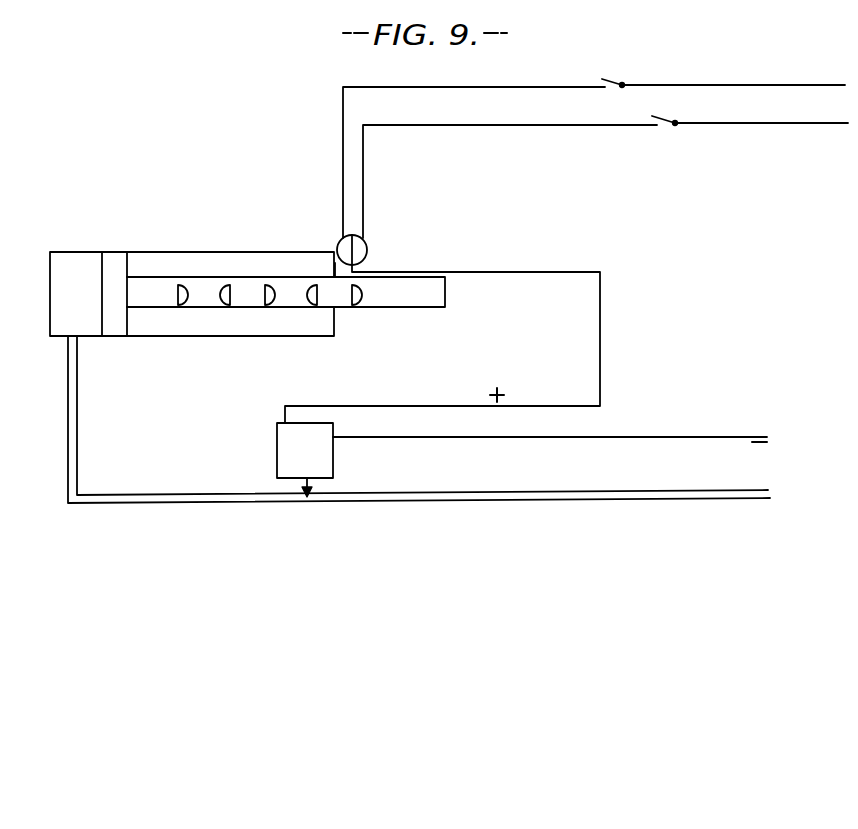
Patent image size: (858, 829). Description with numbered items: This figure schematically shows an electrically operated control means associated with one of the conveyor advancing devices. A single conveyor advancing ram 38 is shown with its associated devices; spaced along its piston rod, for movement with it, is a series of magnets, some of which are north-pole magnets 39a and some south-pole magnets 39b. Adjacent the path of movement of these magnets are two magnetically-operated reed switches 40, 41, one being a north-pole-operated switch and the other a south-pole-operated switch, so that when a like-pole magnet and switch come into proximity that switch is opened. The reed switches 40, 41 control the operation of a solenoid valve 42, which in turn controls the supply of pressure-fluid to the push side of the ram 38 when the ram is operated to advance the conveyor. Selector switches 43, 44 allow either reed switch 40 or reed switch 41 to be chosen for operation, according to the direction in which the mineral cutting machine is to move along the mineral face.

The conveyor advancing ram 38 is at (235, 252).
The north-pole magnets 39a is at (183, 305).
The south-pole magnets 39b is at (224, 305).
The magnetically-operated reed switch 40 is at (366, 250).
The magnetically-operated reed switch 41 is at (340, 253).
The solenoid valve 42 is at (292, 448).
The selector switch 43 is at (668, 128).
The selector switch 44 is at (613, 80).